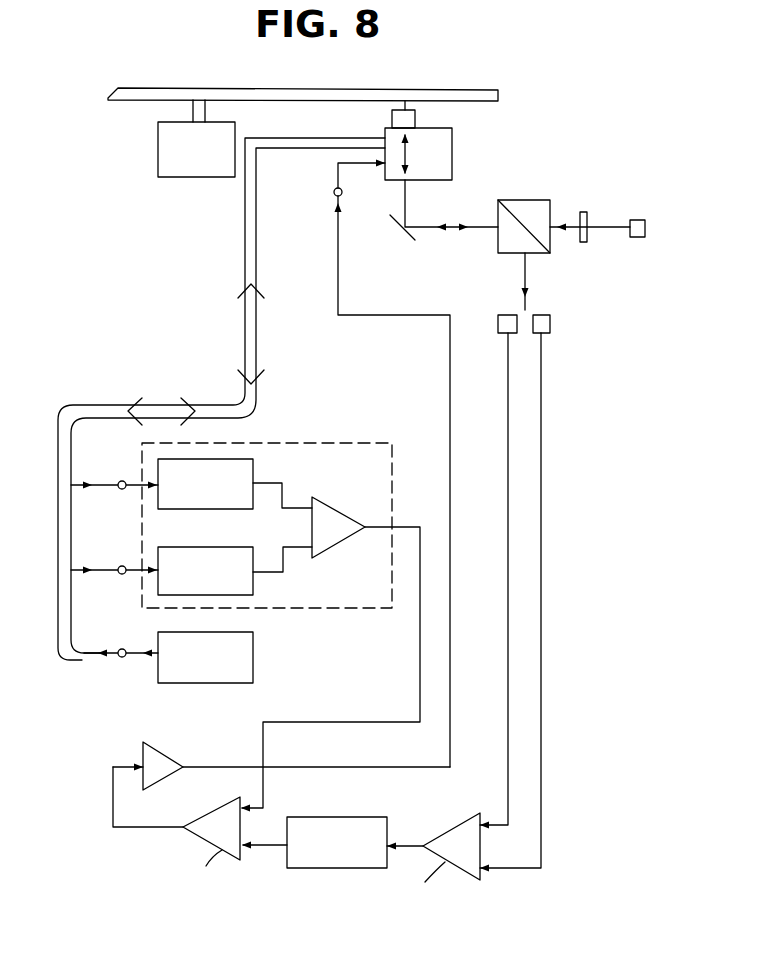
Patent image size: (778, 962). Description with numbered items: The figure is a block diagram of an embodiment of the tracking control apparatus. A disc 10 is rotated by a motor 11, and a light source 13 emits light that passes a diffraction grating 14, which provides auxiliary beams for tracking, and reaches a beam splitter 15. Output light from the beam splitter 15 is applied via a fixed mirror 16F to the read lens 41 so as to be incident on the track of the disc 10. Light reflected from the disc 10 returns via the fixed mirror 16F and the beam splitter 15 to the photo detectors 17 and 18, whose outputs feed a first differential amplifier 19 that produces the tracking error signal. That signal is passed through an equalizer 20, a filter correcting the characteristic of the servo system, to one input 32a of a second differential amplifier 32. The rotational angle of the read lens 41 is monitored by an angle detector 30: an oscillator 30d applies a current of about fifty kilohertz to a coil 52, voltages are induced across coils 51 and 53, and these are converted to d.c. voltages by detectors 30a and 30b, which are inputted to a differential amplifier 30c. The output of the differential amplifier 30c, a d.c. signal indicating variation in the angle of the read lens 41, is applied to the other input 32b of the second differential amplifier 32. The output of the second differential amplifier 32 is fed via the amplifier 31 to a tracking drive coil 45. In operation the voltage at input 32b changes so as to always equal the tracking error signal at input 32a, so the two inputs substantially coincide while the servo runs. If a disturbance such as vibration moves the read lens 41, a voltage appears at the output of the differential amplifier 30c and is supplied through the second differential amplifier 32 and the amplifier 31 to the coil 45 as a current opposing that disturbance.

The disc 10 is at (387, 92).
The motor 11 is at (182, 172).
The light source 13 is at (640, 218).
The diffraction grating 14 is at (585, 243).
The beam splitter 15 is at (530, 200).
The fixed mirror 16F is at (398, 230).
The photo detector 17 is at (541, 335).
The photo detector 18 is at (506, 335).
The first differential amplifier 19 is at (447, 828).
The equalizer 20 is at (338, 817).
The angle detector 30 is at (338, 443).
The detector 30a is at (250, 458).
The detector 30b is at (250, 547).
The differential amplifier 30c is at (337, 515).
The oscillator 30d is at (253, 660).
The amplifier 31 is at (165, 758).
The second differential amplifier 32 is at (215, 808).
The input 32a is at (247, 850).
The input 32b is at (268, 808).
The read lens 41 is at (415, 118).
The tracking drive coil 45 is at (334, 190).
The coil 51 is at (118, 481).
The coil 52 is at (118, 649).
The coil 53 is at (118, 566).